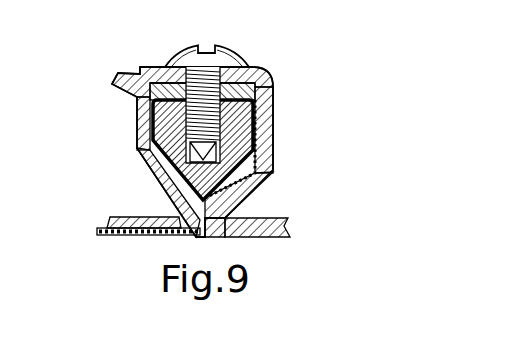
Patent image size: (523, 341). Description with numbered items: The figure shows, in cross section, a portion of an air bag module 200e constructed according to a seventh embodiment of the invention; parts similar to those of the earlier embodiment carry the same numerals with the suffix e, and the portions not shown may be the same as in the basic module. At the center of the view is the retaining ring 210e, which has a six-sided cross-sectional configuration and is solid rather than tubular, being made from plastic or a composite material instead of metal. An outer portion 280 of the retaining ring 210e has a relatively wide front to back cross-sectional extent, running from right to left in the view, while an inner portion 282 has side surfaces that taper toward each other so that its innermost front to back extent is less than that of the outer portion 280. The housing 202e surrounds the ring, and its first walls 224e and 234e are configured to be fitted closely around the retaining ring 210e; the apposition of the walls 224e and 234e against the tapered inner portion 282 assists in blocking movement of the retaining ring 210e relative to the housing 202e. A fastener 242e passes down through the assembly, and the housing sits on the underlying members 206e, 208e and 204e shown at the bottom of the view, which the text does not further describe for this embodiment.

The air bag module 200e is at (66, 97).
The housing 202e is at (130, 61).
The screw 242e is at (222, 50).
The outer portion 280 is at (256, 108).
The first wall 234e is at (272, 137).
The inner portion 282 is at (262, 183).
The retaining ring 210e is at (150, 132).
The first wall 224e is at (147, 178).
The base plate 206e is at (110, 218).
The gasket 208e is at (146, 237).
The base plate 204e is at (288, 227).